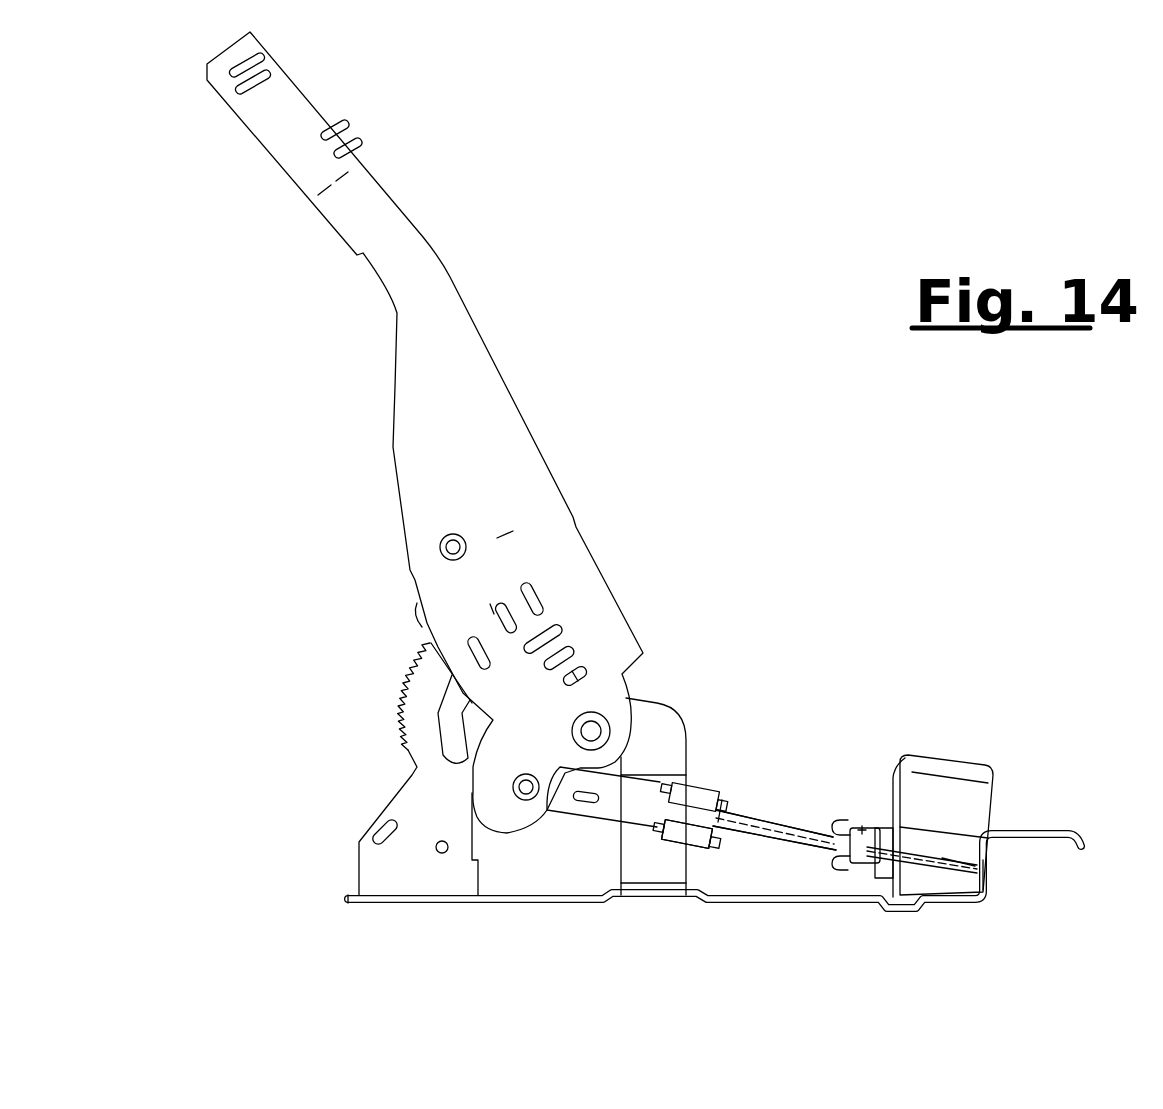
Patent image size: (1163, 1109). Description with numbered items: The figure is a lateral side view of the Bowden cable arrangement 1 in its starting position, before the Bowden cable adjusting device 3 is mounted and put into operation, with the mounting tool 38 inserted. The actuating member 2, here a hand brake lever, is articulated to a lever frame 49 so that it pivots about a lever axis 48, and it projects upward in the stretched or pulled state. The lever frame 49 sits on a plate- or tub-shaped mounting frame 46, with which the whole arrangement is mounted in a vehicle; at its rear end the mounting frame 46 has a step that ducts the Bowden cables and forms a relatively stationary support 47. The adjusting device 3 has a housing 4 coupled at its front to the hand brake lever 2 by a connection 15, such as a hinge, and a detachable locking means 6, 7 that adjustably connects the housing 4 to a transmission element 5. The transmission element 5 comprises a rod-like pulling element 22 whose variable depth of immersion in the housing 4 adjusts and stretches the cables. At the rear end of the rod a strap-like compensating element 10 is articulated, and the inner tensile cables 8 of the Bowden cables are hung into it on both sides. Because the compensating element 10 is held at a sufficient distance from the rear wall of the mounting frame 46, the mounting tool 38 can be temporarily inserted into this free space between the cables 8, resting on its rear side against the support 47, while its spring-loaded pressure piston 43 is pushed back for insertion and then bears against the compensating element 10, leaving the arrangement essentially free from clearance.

The Bowden cable arrangement 1 is at (885, 645).
The actuating member 2 is at (453, 403).
The Bowden cable adjusting device 3 is at (742, 730).
The housing 4 is at (620, 807).
The transmission element 5 is at (785, 812).
The detachable locking means 6 is at (717, 833).
The clip 7 is at (687, 834).
The tensile cable 8 is at (942, 858).
The compensating element 10 is at (862, 822).
The connection 15 is at (527, 780).
The pulling element 22 is at (774, 830).
The mounting tool 38 is at (993, 752).
The pressure piston 43 is at (897, 772).
The mounting frame 46 is at (348, 895).
The support 47 is at (990, 865).
The lever axis 48 is at (591, 730).
The lever frame 49 is at (407, 808).